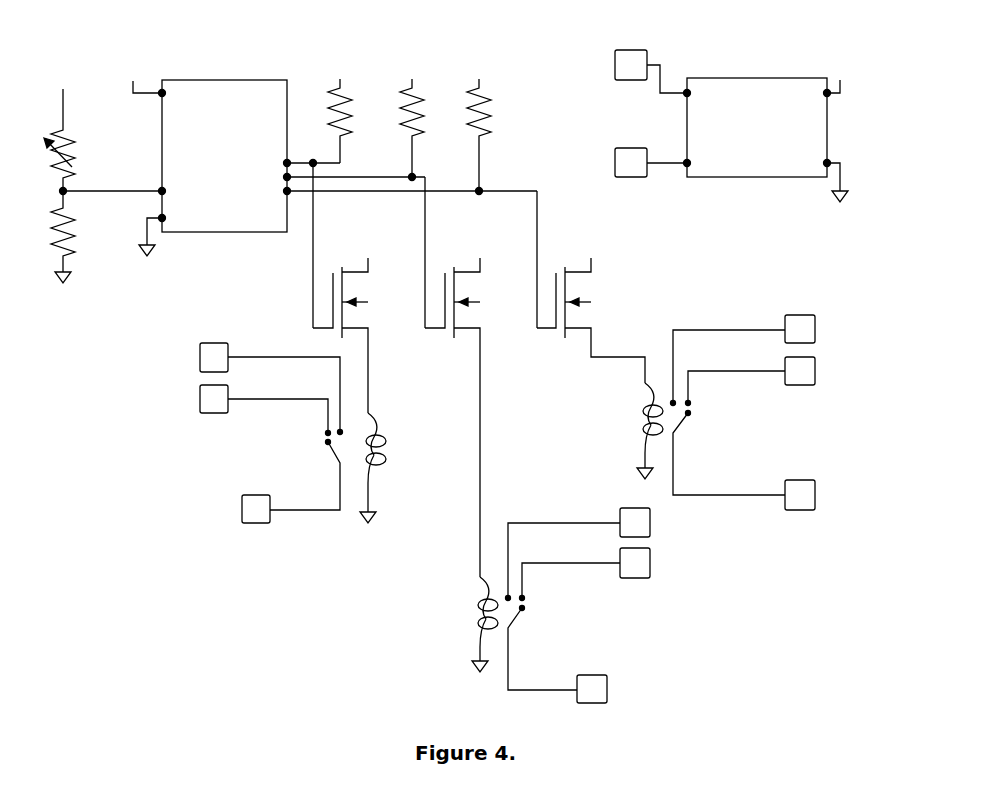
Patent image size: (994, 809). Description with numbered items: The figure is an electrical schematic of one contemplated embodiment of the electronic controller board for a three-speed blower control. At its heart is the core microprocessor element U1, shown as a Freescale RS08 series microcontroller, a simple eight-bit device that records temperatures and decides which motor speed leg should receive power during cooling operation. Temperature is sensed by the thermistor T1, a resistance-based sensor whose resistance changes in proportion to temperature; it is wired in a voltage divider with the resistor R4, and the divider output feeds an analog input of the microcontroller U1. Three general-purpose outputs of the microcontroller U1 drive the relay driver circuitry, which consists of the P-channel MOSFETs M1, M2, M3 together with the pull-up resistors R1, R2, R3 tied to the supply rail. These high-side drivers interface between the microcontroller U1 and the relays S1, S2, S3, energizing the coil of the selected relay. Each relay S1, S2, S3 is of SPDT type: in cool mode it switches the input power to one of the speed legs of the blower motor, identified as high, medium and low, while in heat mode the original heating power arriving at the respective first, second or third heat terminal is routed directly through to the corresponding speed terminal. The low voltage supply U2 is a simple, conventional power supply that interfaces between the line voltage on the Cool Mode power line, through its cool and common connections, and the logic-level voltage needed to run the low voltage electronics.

The thermistor T1 is at (74, 124).
The resistor R4 is at (78, 237).
The core microprocessor element U1 is at (209, 152).
The resistor R1 is at (355, 105).
The resistor R2 is at (427, 112).
The resistor R3 is at (494, 119).
The P-channel MOSFET M1 is at (362, 318).
The P-channel MOSFET M2 is at (474, 400).
The P-channel MOSFET M3 is at (591, 303).
The relay S1 is at (243, 433).
The relay S2 is at (601, 605).
The relay S3 is at (766, 412).
The low voltage supply U2 is at (701, 124).